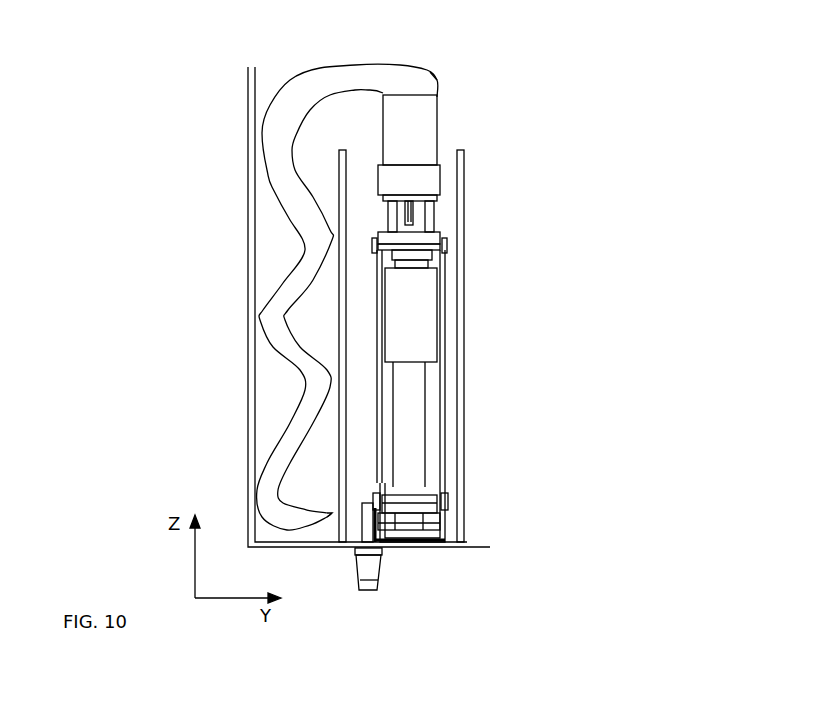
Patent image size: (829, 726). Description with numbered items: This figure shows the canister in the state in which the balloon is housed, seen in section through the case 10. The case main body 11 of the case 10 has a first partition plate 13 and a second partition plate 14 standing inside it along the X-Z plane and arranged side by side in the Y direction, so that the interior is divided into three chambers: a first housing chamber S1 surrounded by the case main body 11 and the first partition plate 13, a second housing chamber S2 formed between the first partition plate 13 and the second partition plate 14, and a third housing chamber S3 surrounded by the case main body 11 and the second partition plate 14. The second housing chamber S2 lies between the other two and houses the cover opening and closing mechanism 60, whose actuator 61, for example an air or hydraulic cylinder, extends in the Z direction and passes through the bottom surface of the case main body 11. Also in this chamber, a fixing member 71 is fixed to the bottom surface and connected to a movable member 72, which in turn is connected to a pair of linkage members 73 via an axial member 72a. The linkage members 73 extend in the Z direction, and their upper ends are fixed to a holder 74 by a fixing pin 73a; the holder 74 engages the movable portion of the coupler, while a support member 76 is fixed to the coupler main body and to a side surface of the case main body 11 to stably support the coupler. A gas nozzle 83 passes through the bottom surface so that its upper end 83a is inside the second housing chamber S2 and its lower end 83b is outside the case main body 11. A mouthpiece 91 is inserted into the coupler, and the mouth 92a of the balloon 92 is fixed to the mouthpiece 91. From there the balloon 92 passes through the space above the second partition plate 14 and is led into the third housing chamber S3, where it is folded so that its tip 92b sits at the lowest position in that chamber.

The case 10 is at (319, 307).
The case main body 11 is at (253, 194).
The first partition plate 13 is at (460, 343).
The second partition plate 14 is at (343, 185).
The cover opening and closing mechanism 60 is at (431, 394).
The actuator 61 is at (430, 218).
The fixing member 71 is at (444, 531).
The movable member 72 is at (410, 547).
The axial member 72a is at (401, 500).
The linkage members 73 is at (443, 446).
The fixing pin 73a is at (372, 246).
The holder 74 is at (440, 233).
The support member 76 is at (405, 305).
The gas nozzle 83 is at (341, 594).
The upper end of the gas nozzle 83a is at (364, 505).
The lower end of the gas nozzle 83b is at (367, 572).
The mouthpiece 91 is at (422, 123).
The balloon 92 is at (316, 64).
The mouth of the balloon 92a is at (437, 97).
The tip of the balloon 92b is at (325, 515).
The first housing chamber S1 is at (489, 176).
The second housing chamber S2 is at (354, 365).
The third housing chamber S3 is at (277, 247).